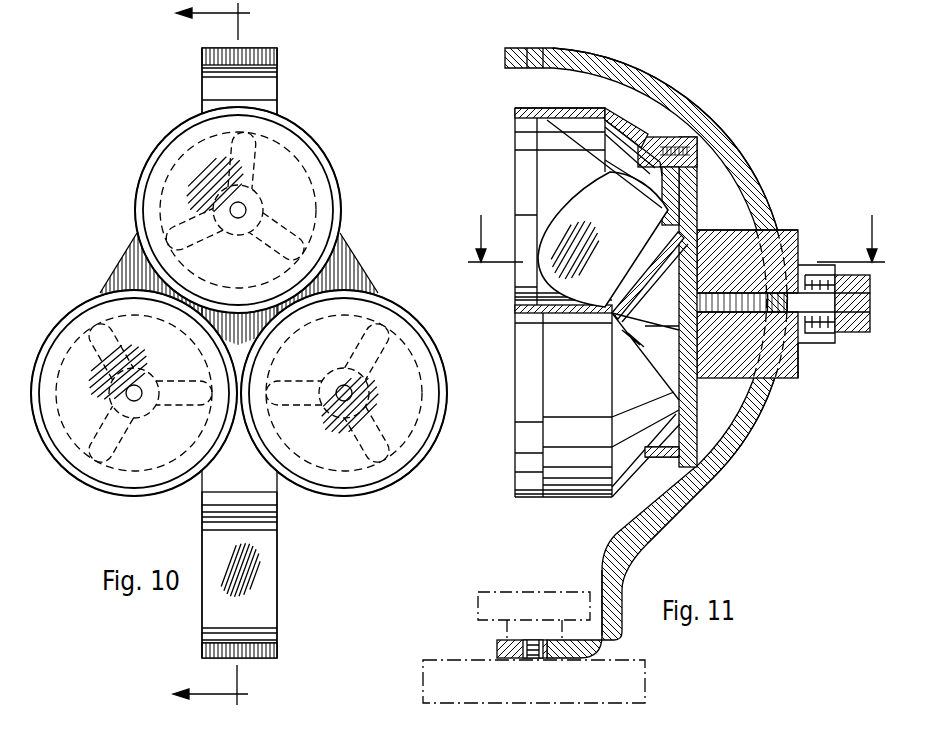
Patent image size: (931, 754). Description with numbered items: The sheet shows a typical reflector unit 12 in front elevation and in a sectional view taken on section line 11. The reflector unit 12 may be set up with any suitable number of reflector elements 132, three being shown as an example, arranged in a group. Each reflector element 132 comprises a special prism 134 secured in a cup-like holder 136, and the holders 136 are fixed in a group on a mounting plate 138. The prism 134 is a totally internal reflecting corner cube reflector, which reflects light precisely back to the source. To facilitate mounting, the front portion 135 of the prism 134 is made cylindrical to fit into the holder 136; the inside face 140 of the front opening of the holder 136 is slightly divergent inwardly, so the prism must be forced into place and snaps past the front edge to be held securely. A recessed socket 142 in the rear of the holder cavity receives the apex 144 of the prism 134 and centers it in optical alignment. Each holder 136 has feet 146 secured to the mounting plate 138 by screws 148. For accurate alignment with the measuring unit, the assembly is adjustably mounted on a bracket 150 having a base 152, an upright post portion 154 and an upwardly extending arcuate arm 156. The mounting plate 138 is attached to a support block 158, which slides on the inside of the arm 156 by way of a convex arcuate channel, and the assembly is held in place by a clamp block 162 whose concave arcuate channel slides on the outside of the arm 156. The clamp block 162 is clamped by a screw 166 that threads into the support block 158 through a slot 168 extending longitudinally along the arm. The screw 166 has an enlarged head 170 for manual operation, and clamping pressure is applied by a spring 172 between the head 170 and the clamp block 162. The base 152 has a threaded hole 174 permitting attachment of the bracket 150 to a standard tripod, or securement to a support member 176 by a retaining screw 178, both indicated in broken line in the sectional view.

In FIG. 10, the section line 11 is at (201, 355).
In FIG. 10, the reflector unit 12 is at (155, 128).
In FIG. 11, the reflector unit 12 is at (675, 227).
In FIG. 10, the reflector element 132 is at (128, 194).
In FIG. 11, the reflector element 132 is at (524, 505).
In FIG. 10, the prism 134 is at (308, 163).
In FIG. 11, the prism 134 is at (625, 290).
In FIG. 11, the front portion 135 is at (546, 160).
In FIG. 10, the holder 136 is at (300, 118).
In FIG. 11, the holder 136 is at (573, 99).
In FIG. 10, the mounting plate 138 is at (342, 260).
In FIG. 11, the mounting plate 138 is at (692, 447).
In FIG. 11, the inside face 140 is at (525, 300).
In FIG. 10, the recessed socket 142 is at (239, 301).
In FIG. 11, the recessed socket 142 is at (692, 152).
In FIG. 11, the apex 144 is at (665, 210).
In FIG. 10, the feet 146 is at (239, 298).
In FIG. 11, the feet 146 is at (667, 140).
In FIG. 11, the screws 148 is at (690, 142).
In FIG. 10, the bracket 150 is at (285, 567).
In FIG. 11, the bracket 150 is at (680, 525).
In FIG. 10, the base 152 is at (268, 650).
In FIG. 11, the base 152 is at (500, 645).
In FIG. 10, the upright post portion 154 is at (268, 618).
In FIG. 11, the upright post portion 154 is at (602, 545).
In FIG. 10, the arcuate arm 156 is at (275, 73).
In FIG. 11, the arcuate arm 156 is at (655, 80).
In FIG. 11, the support block 158 is at (732, 376).
In FIG. 11, the clamp block 162 is at (790, 372).
In FIG. 11, the screw 166 is at (790, 291).
In FIG. 11, the slot 168 is at (722, 482).
In FIG. 11, the enlarged head 170 is at (863, 334).
In FIG. 11, the spring 172 is at (822, 340).
In FIG. 11, the threaded hole 174 is at (540, 659).
In FIG. 11, the support member 176 is at (645, 686).
In FIG. 11, the retaining screw 178 is at (495, 590).